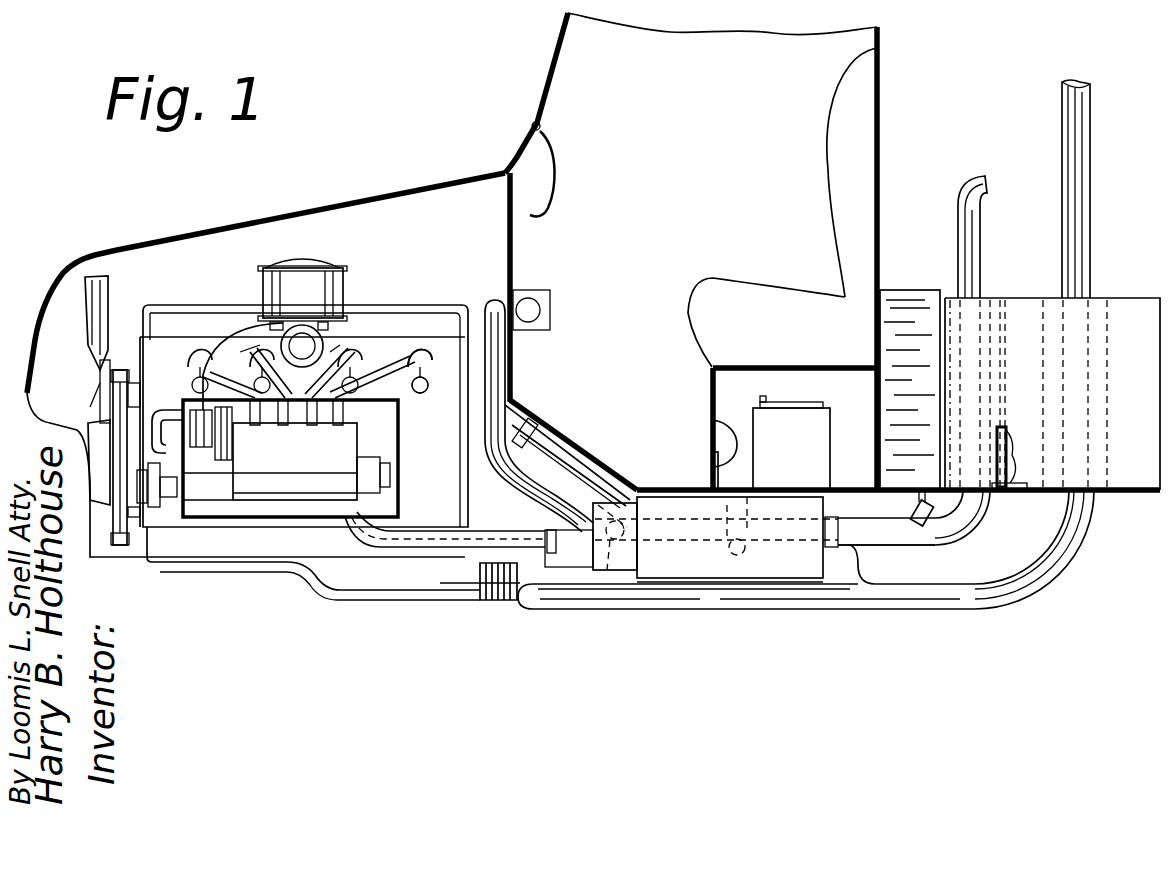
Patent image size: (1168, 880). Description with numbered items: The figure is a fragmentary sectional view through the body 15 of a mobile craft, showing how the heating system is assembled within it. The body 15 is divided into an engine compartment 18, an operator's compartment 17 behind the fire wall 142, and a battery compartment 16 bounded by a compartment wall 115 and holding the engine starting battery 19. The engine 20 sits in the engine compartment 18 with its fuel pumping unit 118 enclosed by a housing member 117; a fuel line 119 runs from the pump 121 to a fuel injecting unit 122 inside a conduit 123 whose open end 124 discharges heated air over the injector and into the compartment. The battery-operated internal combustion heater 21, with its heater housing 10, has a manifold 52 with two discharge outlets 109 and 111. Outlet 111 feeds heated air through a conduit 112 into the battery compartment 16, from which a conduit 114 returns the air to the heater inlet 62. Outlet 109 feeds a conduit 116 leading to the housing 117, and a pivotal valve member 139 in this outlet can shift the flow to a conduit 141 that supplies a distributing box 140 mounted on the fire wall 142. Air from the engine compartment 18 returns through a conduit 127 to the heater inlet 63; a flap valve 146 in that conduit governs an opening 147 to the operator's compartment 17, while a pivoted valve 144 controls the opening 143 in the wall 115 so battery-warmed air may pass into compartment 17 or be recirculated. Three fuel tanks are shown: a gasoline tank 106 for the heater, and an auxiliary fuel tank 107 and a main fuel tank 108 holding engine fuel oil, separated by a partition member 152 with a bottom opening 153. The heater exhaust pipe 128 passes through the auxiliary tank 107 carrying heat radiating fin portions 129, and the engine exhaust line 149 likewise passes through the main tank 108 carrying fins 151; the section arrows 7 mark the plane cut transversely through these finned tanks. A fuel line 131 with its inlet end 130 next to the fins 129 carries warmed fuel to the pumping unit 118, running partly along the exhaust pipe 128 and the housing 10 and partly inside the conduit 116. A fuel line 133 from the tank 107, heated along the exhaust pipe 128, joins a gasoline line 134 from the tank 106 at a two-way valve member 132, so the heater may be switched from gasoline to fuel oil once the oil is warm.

The section line 7 is at (985, 377).
The heater housing 10 is at (789, 580).
The body 15 is at (500, 162).
The battery compartment 16 is at (770, 380).
The operator's compartment 17 is at (715, 223).
The engine compartment 18 is at (407, 248).
The engine starting battery 19 is at (818, 442).
The engine 20 is at (375, 355).
The heater 21 is at (705, 577).
The manifold 52 is at (618, 567).
The inlet 62 is at (744, 552).
The heater inlet 63 is at (605, 470).
The tank 106 is at (902, 297).
The auxiliary fuel tank 107 is at (983, 300).
The main fuel tank 108 is at (1125, 307).
The discharge outlet 109 is at (587, 553).
The discharge outlet 111 is at (607, 570).
The conduit 112 is at (668, 548).
The conduit 114 is at (745, 510).
The compartment wall 115 is at (750, 370).
The conduit 116 is at (427, 545).
The housing member 117 is at (315, 458).
The fuel pumping unit 118 is at (268, 490).
The fuel line 119 is at (353, 407).
The pump 121 is at (337, 427).
The fuel injecting unit 122 is at (425, 393).
The conduit 123 is at (370, 363).
The opposite end 124 is at (430, 385).
The conduit 127 is at (587, 468).
The exhaust pipe 128 is at (905, 535).
The heat radiating fin portions 129 is at (950, 290).
The inlet end 130 is at (988, 492).
The fuel line 131 is at (949, 538).
The two-way valve member 132 is at (916, 502).
The fuel line 133 is at (950, 507).
The line 134 is at (880, 527).
The pivotal valve member 139 is at (555, 553).
The distributing box 140 is at (550, 307).
The conduit 141 is at (497, 364).
The fire wall 142 is at (512, 258).
The valve controlled opening 143 is at (710, 463).
The pivoted valve 144 is at (771, 455).
The flap valve 146 is at (533, 420).
The opening 147 is at (562, 425).
The engine exhaust line 149 is at (724, 603).
The heat radiating fins 151 is at (1102, 300).
The partition member 152 is at (1007, 333).
The opening 153 is at (1015, 487).